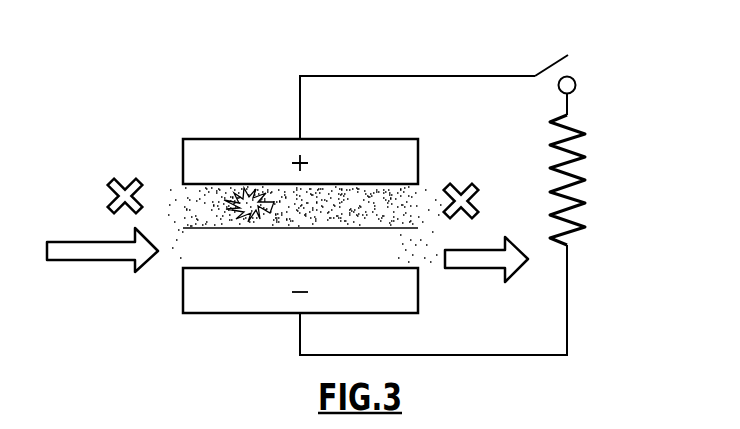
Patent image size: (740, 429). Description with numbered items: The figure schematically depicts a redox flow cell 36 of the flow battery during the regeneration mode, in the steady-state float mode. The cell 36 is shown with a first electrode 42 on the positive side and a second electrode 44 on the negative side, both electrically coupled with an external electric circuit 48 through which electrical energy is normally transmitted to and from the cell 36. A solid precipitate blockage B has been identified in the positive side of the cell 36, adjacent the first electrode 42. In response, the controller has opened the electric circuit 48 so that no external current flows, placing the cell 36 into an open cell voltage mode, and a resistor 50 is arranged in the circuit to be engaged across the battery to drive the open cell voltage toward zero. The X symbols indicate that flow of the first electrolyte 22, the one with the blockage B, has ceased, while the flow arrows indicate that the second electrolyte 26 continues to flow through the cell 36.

The first electrolyte 22 is at (108, 197).
The second electrolyte 26 is at (94, 250).
The redox flow cell 36 is at (165, 288).
The first electrode 42 is at (335, 152).
The second electrode 44 is at (372, 298).
The electric circuit 48 is at (407, 60).
The resistor 50 is at (592, 152).
The solid precipitate blockage B is at (247, 195).